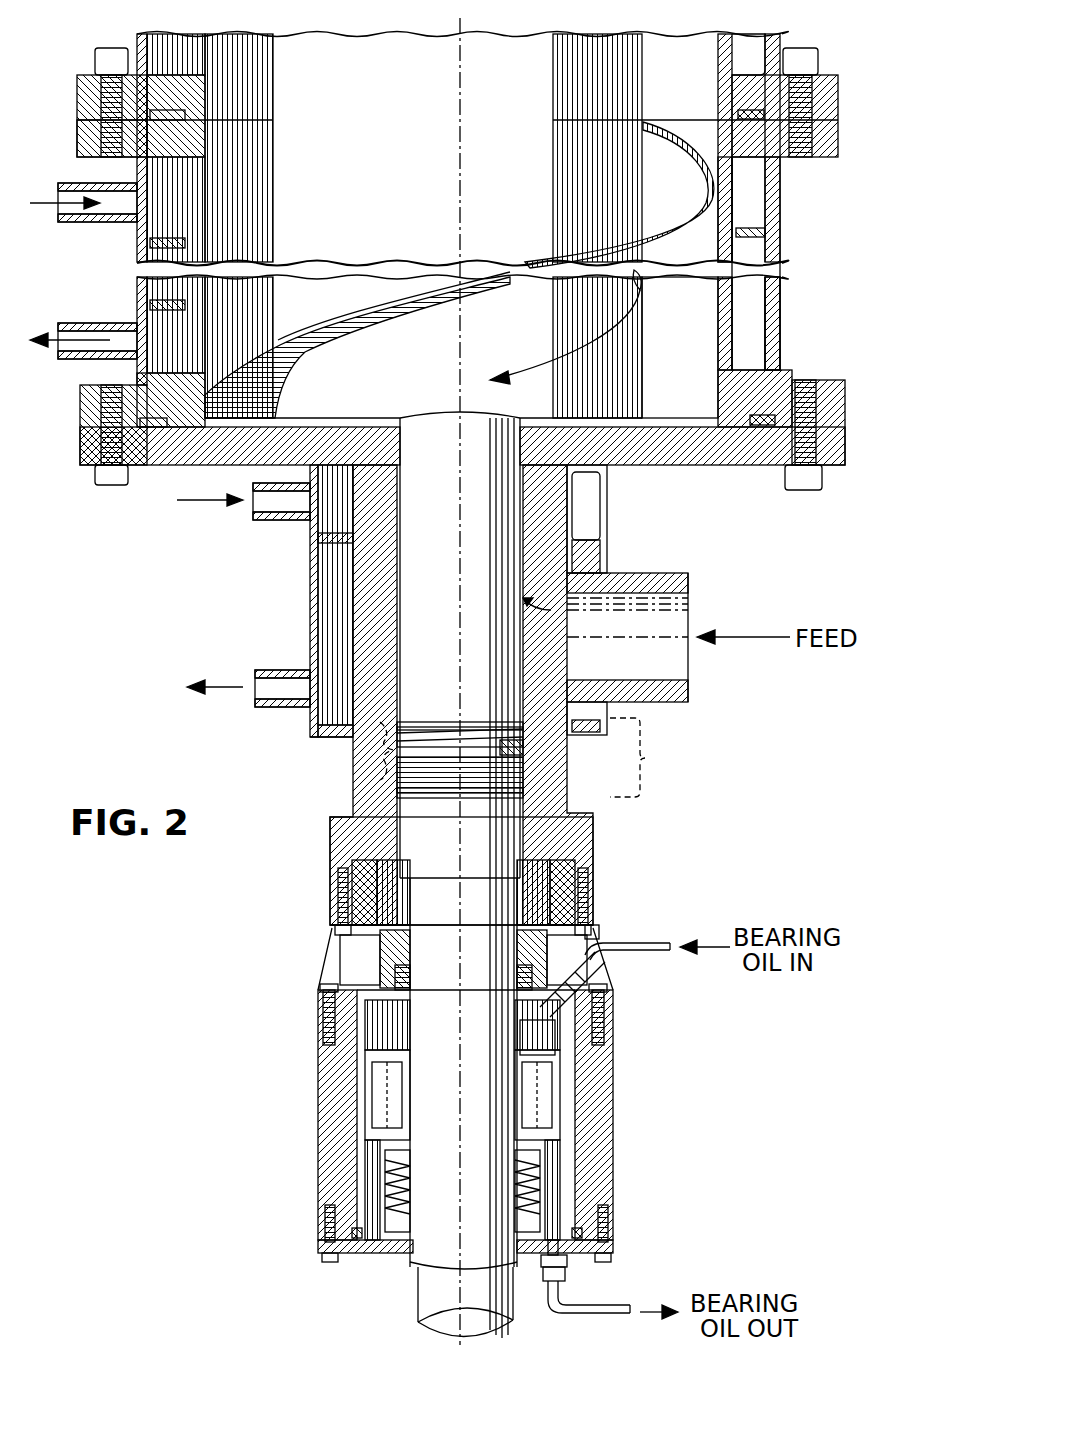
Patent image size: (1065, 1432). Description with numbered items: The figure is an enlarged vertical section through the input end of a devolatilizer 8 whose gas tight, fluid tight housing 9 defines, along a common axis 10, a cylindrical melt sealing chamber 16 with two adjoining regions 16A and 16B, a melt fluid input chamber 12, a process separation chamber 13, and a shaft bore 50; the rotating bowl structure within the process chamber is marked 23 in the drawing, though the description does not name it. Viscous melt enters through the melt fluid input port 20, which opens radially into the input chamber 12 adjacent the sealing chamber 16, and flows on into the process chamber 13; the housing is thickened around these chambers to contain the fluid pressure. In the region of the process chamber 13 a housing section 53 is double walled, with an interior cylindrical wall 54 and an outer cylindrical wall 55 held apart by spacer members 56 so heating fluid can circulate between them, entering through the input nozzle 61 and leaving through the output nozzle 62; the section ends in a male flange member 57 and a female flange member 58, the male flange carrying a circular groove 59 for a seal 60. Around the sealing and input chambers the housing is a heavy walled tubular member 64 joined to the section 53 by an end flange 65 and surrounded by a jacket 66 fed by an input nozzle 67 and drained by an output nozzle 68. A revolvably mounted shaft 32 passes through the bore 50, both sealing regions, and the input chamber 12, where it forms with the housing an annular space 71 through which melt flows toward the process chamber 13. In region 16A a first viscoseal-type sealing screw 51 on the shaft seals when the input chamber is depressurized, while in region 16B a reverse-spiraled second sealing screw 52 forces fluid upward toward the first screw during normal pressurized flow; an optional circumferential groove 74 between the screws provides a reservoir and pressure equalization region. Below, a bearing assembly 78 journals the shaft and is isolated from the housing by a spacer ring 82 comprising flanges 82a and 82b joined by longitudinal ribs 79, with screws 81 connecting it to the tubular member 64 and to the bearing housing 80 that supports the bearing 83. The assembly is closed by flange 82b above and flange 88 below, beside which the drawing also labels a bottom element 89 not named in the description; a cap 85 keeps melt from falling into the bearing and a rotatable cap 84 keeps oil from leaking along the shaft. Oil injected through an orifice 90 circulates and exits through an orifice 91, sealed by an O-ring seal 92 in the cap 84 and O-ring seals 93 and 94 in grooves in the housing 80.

The devolatilizer 8 is at (790, 238).
The housing 9 is at (721, 297).
The common axis 10 is at (463, 1305).
The melt fluid input chamber 12 is at (450, 578).
The process separation chamber 13 is at (692, 351).
The cylindrical melt sealing chamber 16 is at (496, 755).
The first sealing chamber region 16A is at (380, 742).
The second sealing chamber region 16B is at (380, 772).
The melt fluid input port 20 is at (643, 612).
The bowl 23 is at (395, 122).
The revolvably mounted shaft 32 is at (433, 1249).
The shaft input port or bore 50 is at (530, 843).
The first viscoseal-type sealing screw 51 is at (450, 727).
The second viscoseal-type sealing screw 52 is at (435, 790).
The housing section 53 is at (135, 249).
The interior cylindrical wall 54 is at (727, 239).
The outer cylindrical wall 55 is at (780, 300).
The spacer members 56 is at (751, 233).
The male flange member 57 is at (85, 97).
The female flange member 58 is at (80, 150).
The circular groove 59 is at (763, 110).
The seal 60 is at (743, 115).
The input nozzle 61 is at (93, 223).
The output nozzle 62 is at (105, 323).
The heavy walled tubular member 64 is at (363, 575).
The end flange 65 is at (190, 466).
The jacket 66 is at (310, 605).
The input nozzle 67 is at (277, 519).
The output nozzle 68 is at (273, 668).
The annular space 71 is at (403, 488).
The groove 74 is at (517, 748).
The bearing assembly 78 is at (465, 1086).
The ribs 79 is at (337, 972).
The bearing assembly housing 80 is at (340, 1103).
The screws 81 is at (593, 927).
The spacer ring 82 is at (312, 946).
The flange 82a is at (335, 913).
The flange 82b is at (318, 999).
The bearing 83 is at (548, 1090).
The rotatable cap 84 is at (385, 1192).
The cap 85 is at (395, 948).
The flange 88 is at (320, 1248).
The bottom plate 89 is at (328, 1262).
The orifice 90 is at (540, 1037).
The orifice 91 is at (567, 1252).
The O-ring seal 92 is at (410, 1178).
The O-ring seal 93 is at (400, 1023).
The O-ring seal 94 is at (353, 1243).